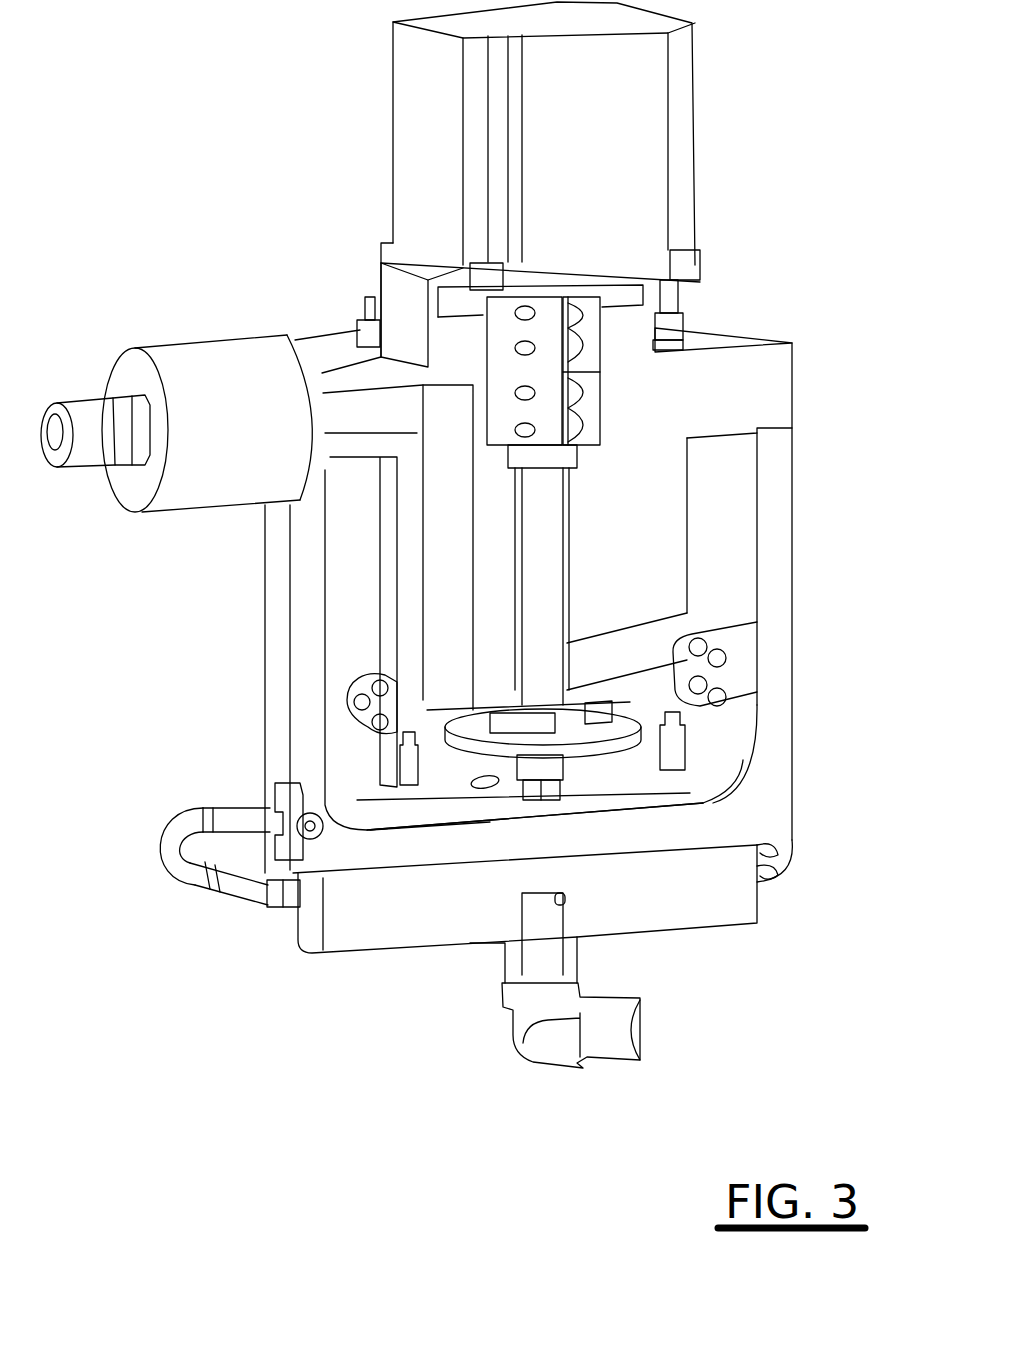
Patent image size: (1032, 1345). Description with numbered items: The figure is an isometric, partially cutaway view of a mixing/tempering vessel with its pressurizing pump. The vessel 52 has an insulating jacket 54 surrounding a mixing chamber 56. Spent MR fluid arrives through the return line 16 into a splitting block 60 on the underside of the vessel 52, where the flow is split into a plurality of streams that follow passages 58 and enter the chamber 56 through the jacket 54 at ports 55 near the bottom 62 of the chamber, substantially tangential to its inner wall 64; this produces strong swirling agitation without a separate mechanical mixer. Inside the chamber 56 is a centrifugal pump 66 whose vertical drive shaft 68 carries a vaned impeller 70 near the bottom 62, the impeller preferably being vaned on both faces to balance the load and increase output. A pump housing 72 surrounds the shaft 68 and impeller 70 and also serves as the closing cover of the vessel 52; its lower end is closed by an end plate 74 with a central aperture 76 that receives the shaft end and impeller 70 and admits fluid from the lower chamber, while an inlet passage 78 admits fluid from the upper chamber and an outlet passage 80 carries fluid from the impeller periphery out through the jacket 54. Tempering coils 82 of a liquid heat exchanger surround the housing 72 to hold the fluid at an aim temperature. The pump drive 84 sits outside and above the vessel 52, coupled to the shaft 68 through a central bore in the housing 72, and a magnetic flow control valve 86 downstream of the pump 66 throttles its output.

The return line 16 is at (608, 1003).
The vessel 52 is at (815, 457).
The insulating jacket 54 is at (773, 567).
The ports 55 is at (314, 830).
The mixing chamber 56 is at (720, 590).
The passage 58 is at (223, 883).
The splitting block 60 is at (420, 931).
The bottom 62 is at (583, 803).
The inner wall 64 is at (713, 803).
The centrifugal pump 66 is at (580, 588).
The drive shaft 68 is at (540, 632).
The impeller 70 is at (717, 718).
The pump housing 72 is at (413, 633).
The end plate 74 is at (390, 773).
The central aperture 76 is at (508, 780).
The inlet passage 78 is at (640, 643).
The outlet passage 80 is at (450, 528).
The tempering coils 82 is at (343, 693).
The pump drive 84 is at (607, 158).
The magnetic flow control valve 86 is at (252, 443).